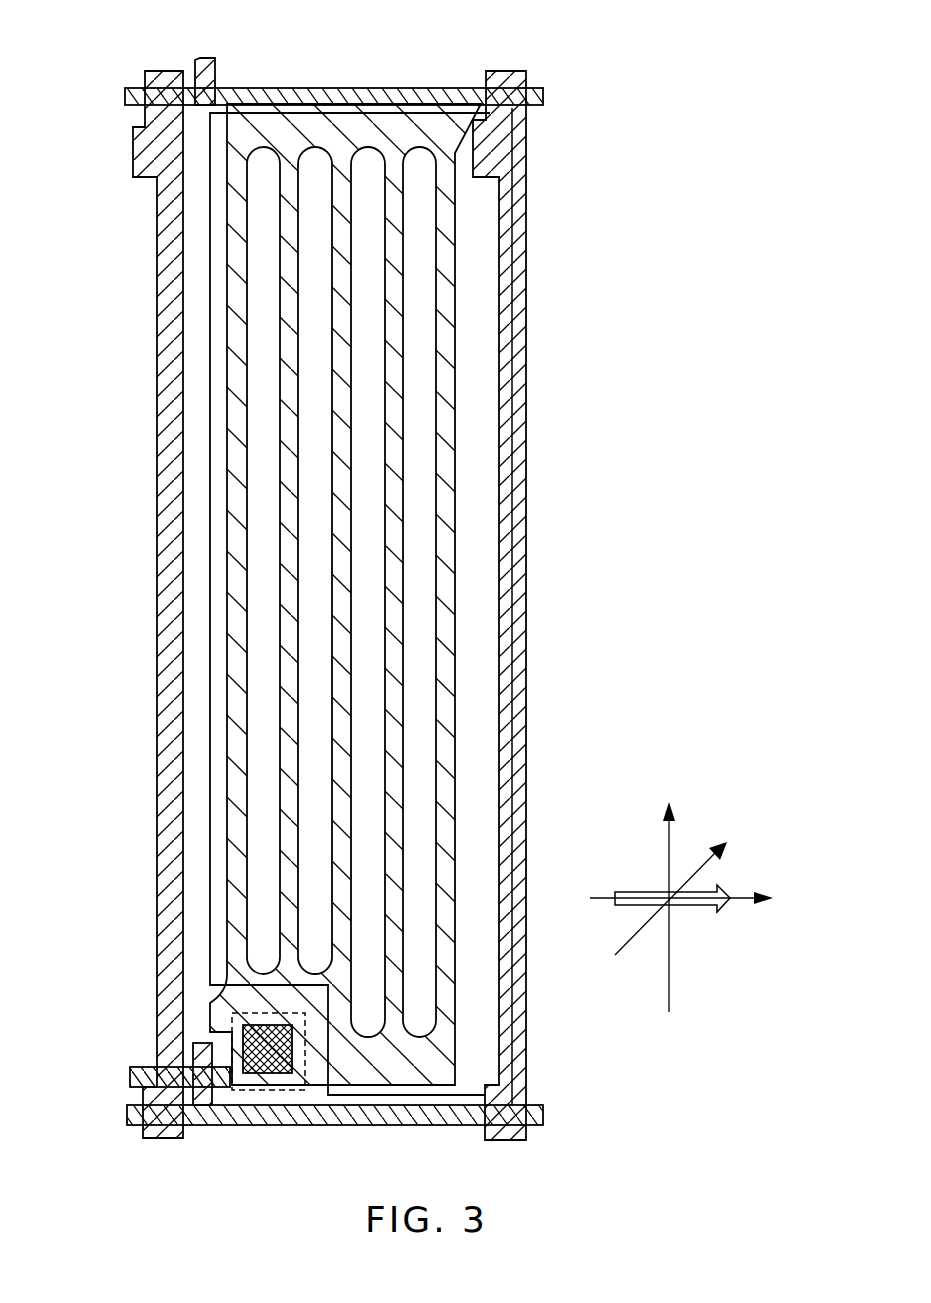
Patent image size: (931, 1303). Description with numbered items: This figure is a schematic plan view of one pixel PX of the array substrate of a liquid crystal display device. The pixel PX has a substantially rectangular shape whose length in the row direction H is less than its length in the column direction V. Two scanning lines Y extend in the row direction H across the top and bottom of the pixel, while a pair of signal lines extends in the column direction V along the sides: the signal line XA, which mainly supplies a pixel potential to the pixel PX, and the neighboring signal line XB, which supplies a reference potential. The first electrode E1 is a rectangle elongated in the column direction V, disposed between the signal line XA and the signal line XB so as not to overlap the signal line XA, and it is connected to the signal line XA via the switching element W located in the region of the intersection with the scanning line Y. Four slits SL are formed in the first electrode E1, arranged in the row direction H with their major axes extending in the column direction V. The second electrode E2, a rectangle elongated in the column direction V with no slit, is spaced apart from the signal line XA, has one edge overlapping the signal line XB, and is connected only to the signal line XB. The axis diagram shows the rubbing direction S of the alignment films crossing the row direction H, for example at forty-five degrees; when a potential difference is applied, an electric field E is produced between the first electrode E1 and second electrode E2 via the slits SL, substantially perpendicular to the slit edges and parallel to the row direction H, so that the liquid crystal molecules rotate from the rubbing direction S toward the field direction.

The signal line XA is at (170, 71).
The signal line XB is at (505, 71).
The pixel PX is at (365, 82).
The scanning line Y is at (547, 95).
The slit SL is at (265, 435).
The first electrode E1 is at (225, 753).
The second electrode E2 is at (208, 818).
The switching element W is at (206, 1053).
The column direction V is at (668, 892).
The row direction H is at (693, 899).
The rubbing direction S is at (677, 890).
The electric field E is at (723, 908).